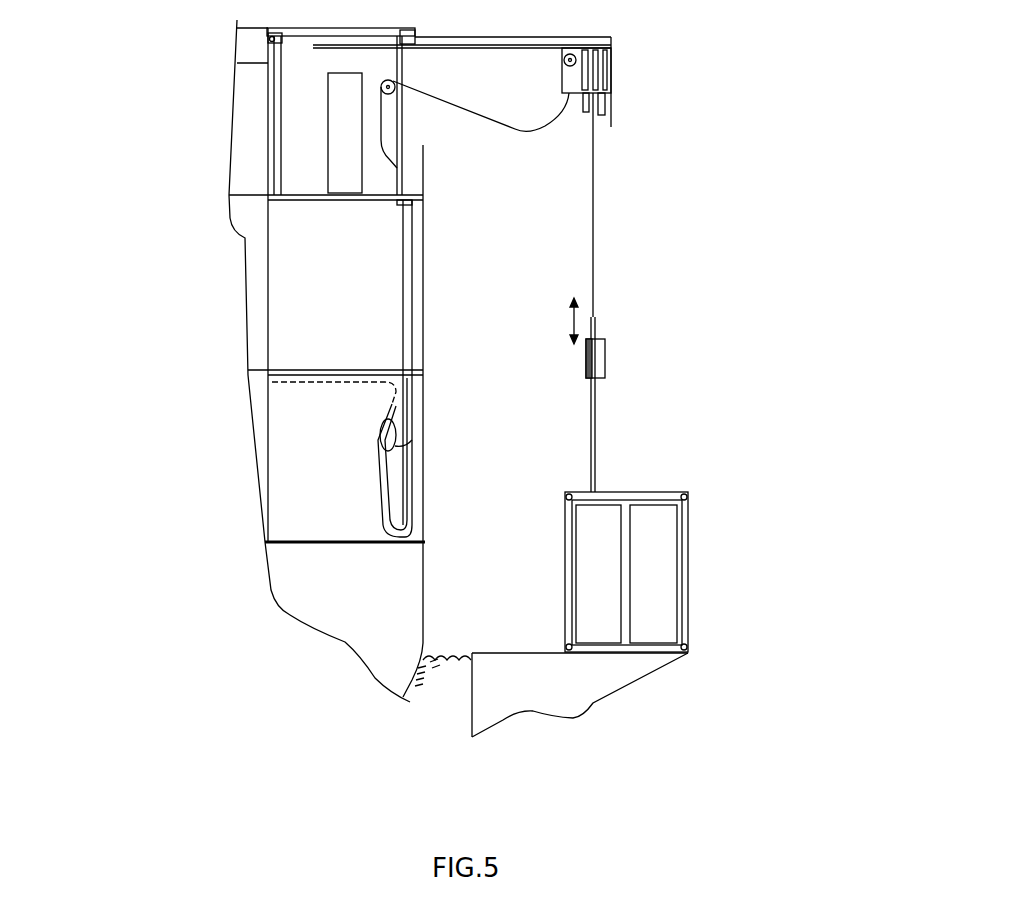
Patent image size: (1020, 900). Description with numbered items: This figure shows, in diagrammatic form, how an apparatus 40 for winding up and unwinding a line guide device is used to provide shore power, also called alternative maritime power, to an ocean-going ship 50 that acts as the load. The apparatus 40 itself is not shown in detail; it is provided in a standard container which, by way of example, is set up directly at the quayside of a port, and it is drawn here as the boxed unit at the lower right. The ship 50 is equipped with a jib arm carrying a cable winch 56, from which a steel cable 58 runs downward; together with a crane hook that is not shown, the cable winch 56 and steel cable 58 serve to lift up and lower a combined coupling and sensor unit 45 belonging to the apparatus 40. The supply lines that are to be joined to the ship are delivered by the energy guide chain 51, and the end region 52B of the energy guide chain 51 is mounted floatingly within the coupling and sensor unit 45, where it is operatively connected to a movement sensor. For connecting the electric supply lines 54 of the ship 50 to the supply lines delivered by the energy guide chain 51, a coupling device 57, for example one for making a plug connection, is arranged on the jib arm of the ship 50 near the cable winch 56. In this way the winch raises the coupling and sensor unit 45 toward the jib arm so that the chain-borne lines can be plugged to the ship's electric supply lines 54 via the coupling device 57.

The apparatus 40 is at (699, 597).
The combined coupling and sensor unit 45 is at (614, 362).
The ocean-going ship 50 is at (334, 299).
The energy guide chain 51 is at (600, 427).
The end region of the energy guide chain 52B is at (578, 377).
The electric supply lines 54 is at (502, 126).
The cable winch 56 is at (620, 73).
The coupling device 57 is at (600, 100).
The steel cable 58 is at (595, 175).